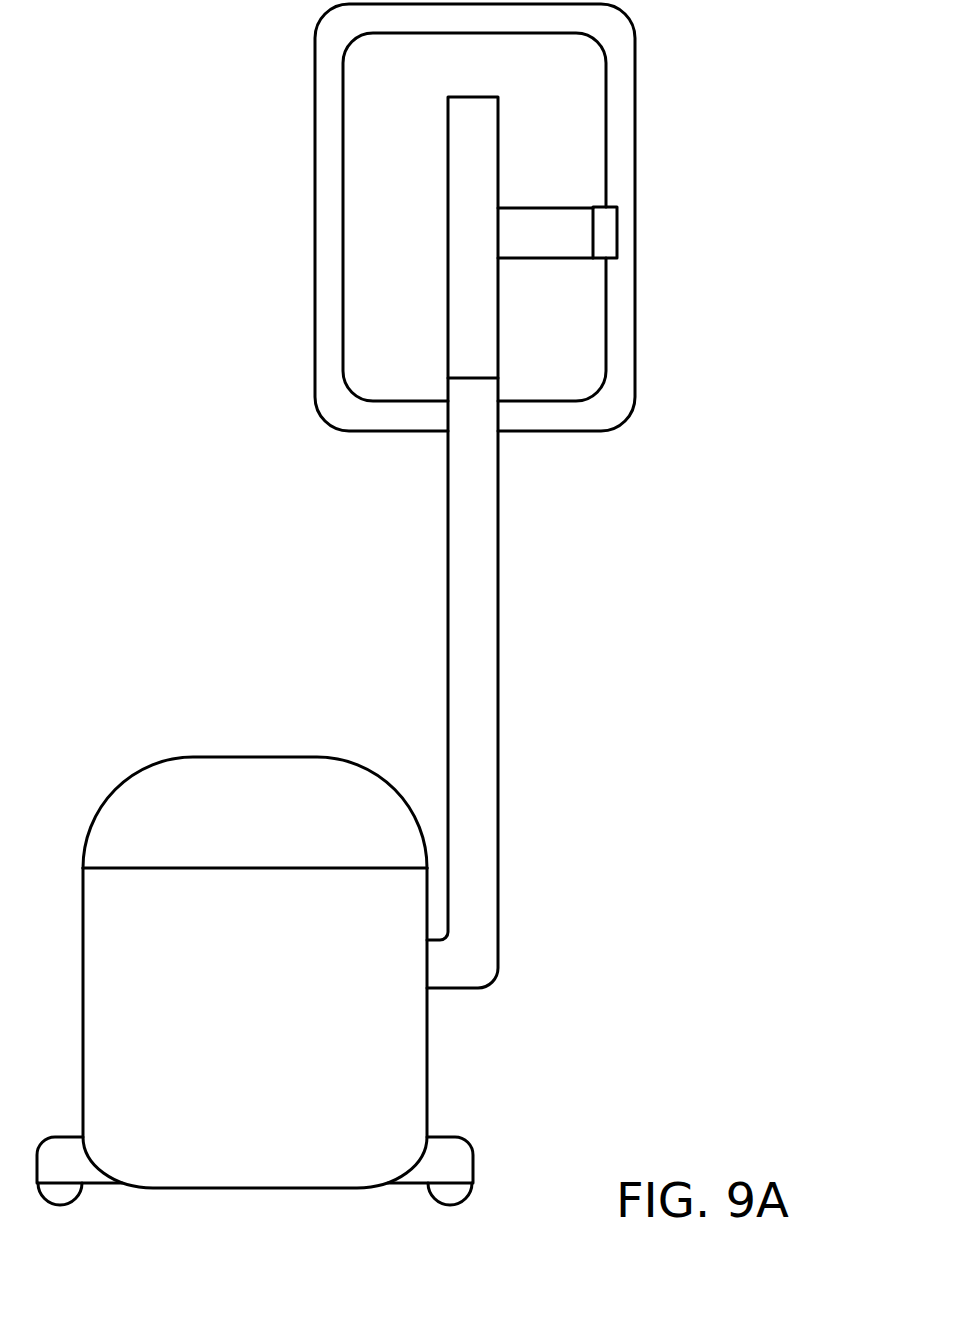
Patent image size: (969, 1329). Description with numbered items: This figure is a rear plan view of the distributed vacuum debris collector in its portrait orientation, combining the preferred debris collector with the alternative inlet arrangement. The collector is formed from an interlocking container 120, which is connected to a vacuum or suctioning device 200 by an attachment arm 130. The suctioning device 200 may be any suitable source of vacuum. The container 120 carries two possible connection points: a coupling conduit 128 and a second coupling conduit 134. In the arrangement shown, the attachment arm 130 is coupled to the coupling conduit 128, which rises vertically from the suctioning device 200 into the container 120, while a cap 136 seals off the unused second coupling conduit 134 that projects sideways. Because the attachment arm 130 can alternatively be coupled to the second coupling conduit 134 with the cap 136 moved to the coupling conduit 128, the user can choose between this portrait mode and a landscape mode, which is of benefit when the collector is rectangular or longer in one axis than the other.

The interlocking container 120 is at (578, 96).
The coupling conduit 128 is at (463, 323).
The attachment arm 130 is at (478, 613).
The second coupling conduit 134 is at (557, 247).
The cap 136 is at (610, 232).
The suctioning device 200 is at (250, 1011).